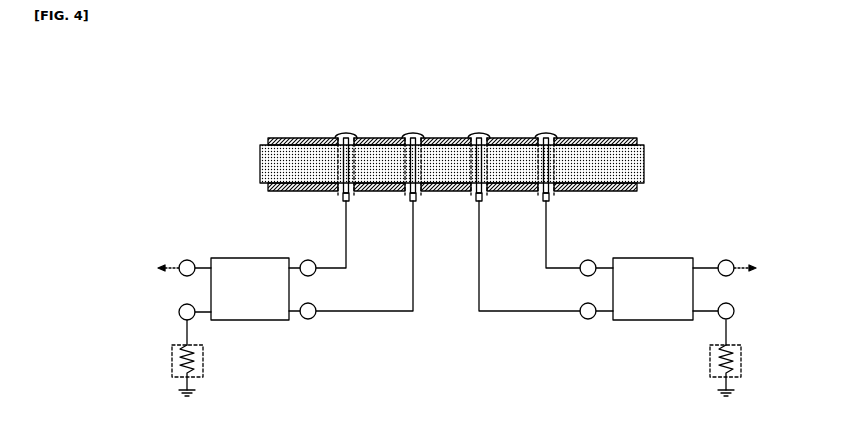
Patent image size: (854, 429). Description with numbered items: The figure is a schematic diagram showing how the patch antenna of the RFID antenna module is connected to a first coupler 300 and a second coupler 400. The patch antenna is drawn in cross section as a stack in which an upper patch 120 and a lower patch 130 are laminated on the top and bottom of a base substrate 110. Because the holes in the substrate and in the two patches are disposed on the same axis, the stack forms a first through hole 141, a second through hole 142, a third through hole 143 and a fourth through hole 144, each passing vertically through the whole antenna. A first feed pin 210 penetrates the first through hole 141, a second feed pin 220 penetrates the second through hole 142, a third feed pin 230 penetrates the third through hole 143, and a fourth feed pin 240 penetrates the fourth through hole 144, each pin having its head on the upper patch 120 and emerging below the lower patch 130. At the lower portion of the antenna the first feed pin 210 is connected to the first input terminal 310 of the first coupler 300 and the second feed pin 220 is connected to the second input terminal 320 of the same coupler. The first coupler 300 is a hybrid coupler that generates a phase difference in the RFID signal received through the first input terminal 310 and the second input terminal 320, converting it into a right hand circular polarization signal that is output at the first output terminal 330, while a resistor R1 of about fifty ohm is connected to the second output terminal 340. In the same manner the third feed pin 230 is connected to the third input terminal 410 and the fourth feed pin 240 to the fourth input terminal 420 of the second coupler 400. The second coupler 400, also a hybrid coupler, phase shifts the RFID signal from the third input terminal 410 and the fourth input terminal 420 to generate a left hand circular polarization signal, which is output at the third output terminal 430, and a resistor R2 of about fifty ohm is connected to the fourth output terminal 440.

The base substrate 110 is at (646, 165).
The upper patch 120 is at (640, 141).
The lower patch 130 is at (640, 188).
The first feed pin 210 is at (549, 130).
The second feed pin 220 is at (482, 130).
The third feed pin 230 is at (349, 130).
The fourth feed pin 240 is at (415, 130).
The first through hole 141 is at (352, 203).
The second through hole 142 is at (419, 203).
The third through hole 143 is at (485, 203).
The fourth through hole 144 is at (552, 203).
The first coupler 300 is at (653, 321).
The first input terminal 310 is at (594, 262).
The second input terminal 320 is at (588, 320).
The first output terminal 330 is at (726, 259).
The second output terminal 340 is at (735, 311).
The second coupler 400 is at (250, 258).
The third input terminal 410 is at (308, 320).
The fourth input terminal 420 is at (308, 259).
The third output terminal 430 is at (187, 259).
The fourth output terminal 440 is at (178, 312).
The resistor R1 is at (743, 354).
The resistor R2 is at (171, 354).